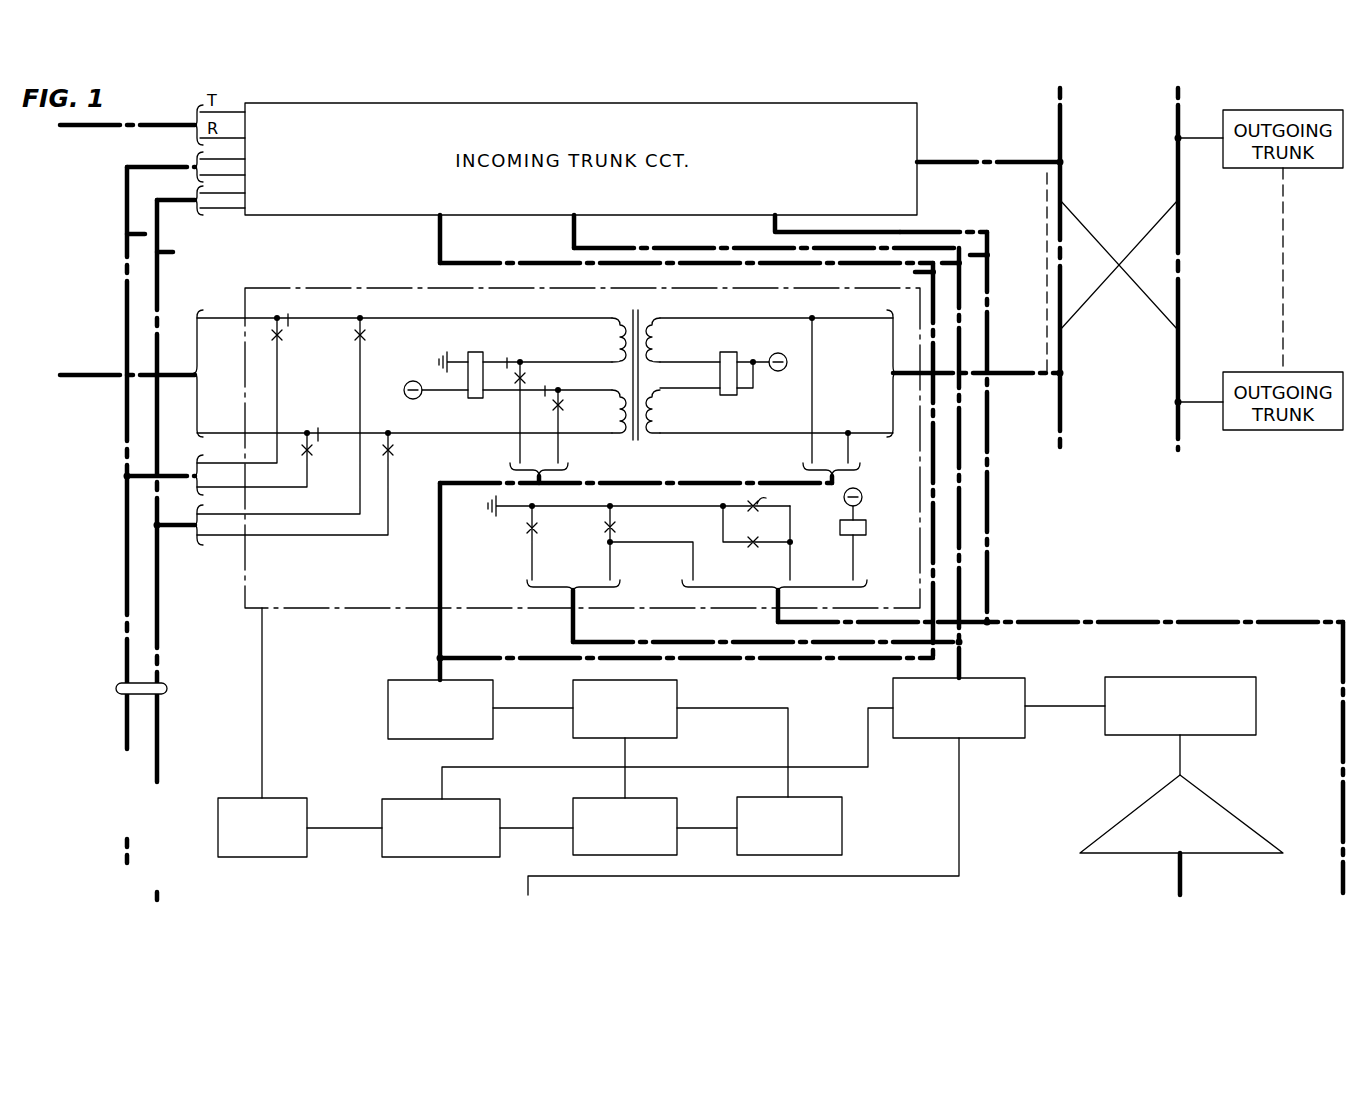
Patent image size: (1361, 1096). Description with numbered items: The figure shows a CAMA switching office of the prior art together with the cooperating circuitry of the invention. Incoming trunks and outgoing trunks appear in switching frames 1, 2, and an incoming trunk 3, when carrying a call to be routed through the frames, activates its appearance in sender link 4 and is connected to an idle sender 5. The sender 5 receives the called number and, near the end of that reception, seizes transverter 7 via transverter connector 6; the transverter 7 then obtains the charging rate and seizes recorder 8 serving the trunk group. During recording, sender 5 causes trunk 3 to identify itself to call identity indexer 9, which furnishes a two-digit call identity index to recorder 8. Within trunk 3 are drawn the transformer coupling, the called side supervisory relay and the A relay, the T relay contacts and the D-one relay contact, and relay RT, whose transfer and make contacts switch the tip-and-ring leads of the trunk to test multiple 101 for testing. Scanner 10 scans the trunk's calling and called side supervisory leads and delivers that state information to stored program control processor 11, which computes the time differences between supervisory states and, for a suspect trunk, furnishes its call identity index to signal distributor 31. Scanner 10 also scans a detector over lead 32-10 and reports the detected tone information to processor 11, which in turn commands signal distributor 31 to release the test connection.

The switching frame 1 is at (1060, 118).
The switching frame 2 is at (1178, 118).
The incoming trunk 3 is at (297, 288).
The sender link 4 is at (388, 693).
The sender 5 is at (677, 688).
The transverter connector 6 is at (830, 795).
The transverter 7 is at (665, 795).
The recorder 8 is at (399, 799).
The call identity indexer 9 is at (232, 798).
The scanner 10 is at (998, 678).
The stored program control processor 11 is at (1176, 677).
The signal distributor 31 is at (1232, 810).
The lead 32-10 is at (959, 806).
The test multiple 101 is at (116, 689).